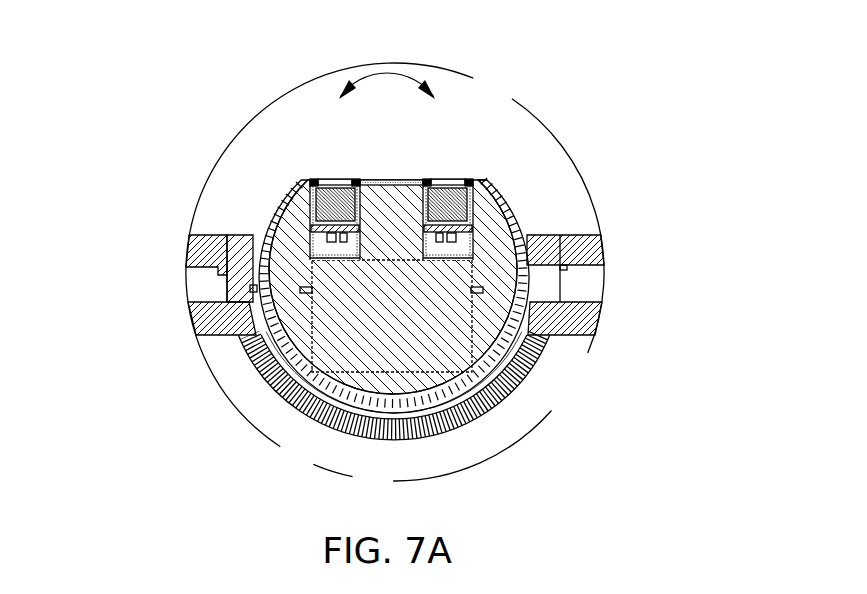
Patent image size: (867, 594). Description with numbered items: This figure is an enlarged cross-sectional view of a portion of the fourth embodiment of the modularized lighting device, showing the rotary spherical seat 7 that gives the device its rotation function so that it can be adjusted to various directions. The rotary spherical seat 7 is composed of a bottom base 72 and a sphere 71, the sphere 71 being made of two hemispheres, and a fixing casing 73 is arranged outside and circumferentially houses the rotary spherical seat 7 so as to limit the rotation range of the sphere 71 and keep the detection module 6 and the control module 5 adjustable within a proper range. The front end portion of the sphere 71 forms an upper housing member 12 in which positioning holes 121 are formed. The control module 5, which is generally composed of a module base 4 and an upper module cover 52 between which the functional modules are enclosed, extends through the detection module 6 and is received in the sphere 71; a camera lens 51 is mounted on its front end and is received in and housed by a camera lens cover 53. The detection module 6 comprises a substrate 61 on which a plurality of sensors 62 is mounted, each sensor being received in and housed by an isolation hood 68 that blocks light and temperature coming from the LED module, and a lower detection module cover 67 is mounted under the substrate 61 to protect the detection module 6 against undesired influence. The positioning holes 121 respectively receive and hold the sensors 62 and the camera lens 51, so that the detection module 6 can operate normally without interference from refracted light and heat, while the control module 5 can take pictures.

The module base 4 is at (266, 388).
The control module 5 is at (487, 356).
The camera lens 51 is at (405, 176).
The upper module cover 52 is at (521, 262).
The camera lens cover 53 is at (513, 98).
The detection module 6 is at (490, 212).
The substrate 61 is at (300, 236).
The sensors 62 is at (450, 203).
The lower detection module cover 67 is at (275, 232).
The isolation hoods 68 is at (323, 177).
The rotary spherical seat 7 is at (189, 283).
The sphere 71 is at (600, 322).
The bottom base 72 is at (233, 338).
The fixing casing 73 is at (228, 257).
The upper housing member 12 is at (258, 232).
The positioning holes 121 is at (424, 175).